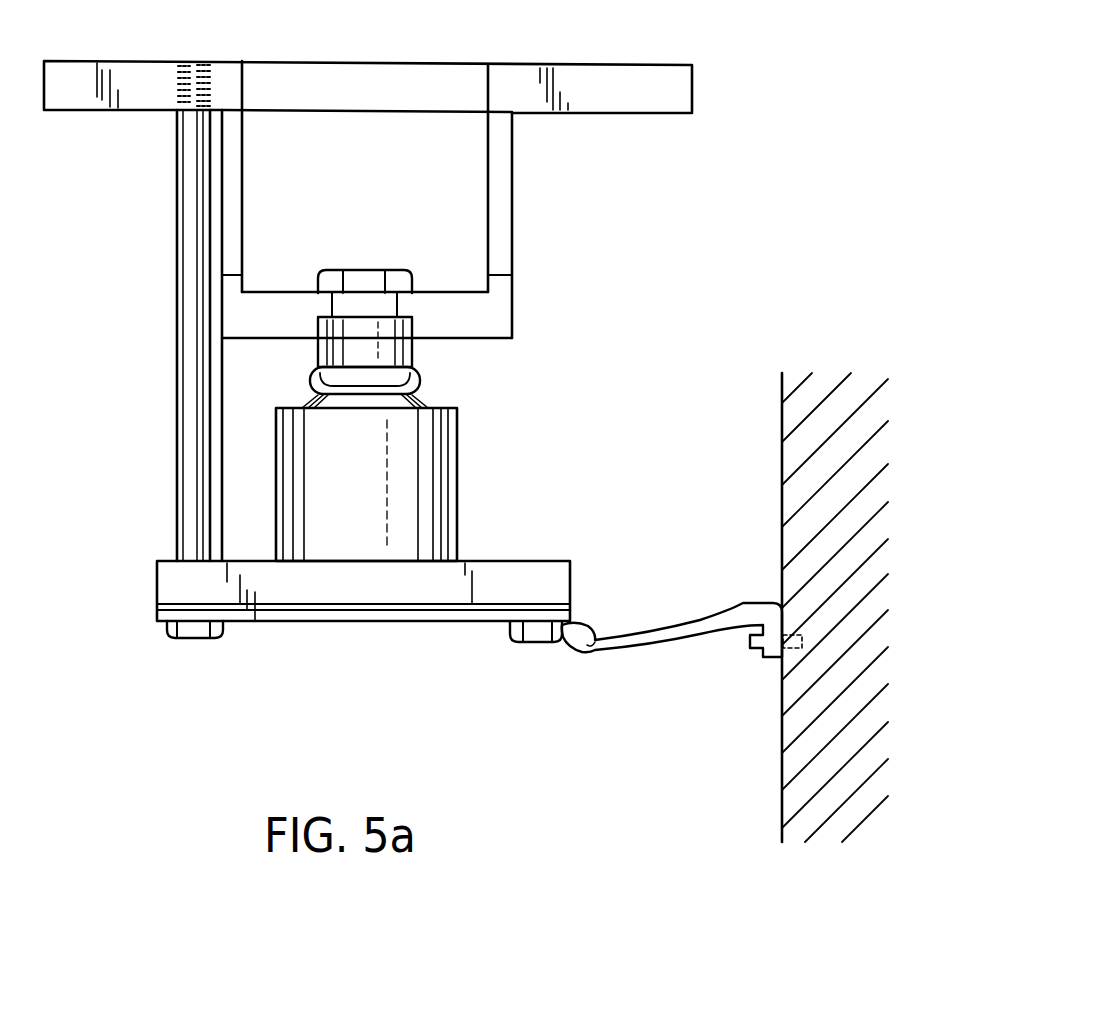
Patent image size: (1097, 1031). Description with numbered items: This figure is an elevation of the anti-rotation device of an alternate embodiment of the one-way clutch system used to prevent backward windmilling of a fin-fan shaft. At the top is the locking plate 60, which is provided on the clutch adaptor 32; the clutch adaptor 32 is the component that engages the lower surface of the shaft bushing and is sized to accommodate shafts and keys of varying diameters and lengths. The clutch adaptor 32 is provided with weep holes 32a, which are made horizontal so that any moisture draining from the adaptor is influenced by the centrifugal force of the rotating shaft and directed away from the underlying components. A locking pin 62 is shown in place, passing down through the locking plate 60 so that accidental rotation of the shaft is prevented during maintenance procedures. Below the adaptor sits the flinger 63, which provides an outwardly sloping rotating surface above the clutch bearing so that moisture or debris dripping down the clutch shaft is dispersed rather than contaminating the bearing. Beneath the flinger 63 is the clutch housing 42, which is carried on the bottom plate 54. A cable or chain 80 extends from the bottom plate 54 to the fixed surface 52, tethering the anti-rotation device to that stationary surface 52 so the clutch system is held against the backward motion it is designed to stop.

The locking plate 60 is at (667, 80).
The clutch adaptor 32 is at (513, 178).
The weep holes 32a is at (503, 287).
The flinger 63 is at (420, 378).
The clutch housing 42 is at (457, 481).
The locking pin 62 is at (188, 411).
The bottom plate 54 is at (407, 623).
The cable or chain 80 is at (683, 638).
The fixed surface 52 is at (780, 765).